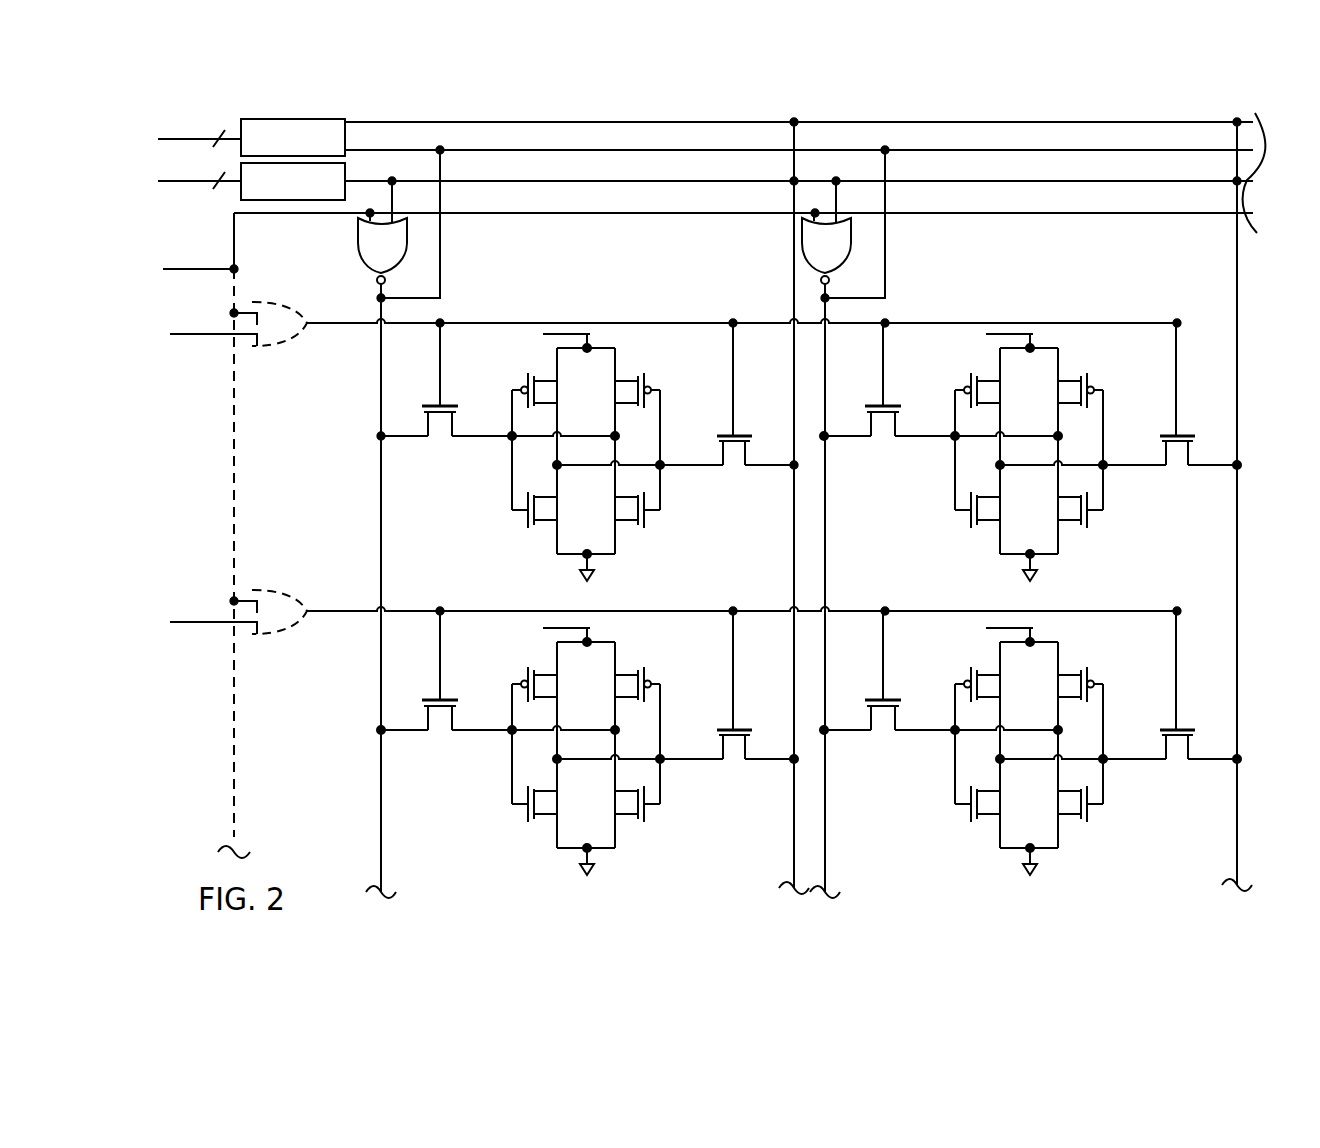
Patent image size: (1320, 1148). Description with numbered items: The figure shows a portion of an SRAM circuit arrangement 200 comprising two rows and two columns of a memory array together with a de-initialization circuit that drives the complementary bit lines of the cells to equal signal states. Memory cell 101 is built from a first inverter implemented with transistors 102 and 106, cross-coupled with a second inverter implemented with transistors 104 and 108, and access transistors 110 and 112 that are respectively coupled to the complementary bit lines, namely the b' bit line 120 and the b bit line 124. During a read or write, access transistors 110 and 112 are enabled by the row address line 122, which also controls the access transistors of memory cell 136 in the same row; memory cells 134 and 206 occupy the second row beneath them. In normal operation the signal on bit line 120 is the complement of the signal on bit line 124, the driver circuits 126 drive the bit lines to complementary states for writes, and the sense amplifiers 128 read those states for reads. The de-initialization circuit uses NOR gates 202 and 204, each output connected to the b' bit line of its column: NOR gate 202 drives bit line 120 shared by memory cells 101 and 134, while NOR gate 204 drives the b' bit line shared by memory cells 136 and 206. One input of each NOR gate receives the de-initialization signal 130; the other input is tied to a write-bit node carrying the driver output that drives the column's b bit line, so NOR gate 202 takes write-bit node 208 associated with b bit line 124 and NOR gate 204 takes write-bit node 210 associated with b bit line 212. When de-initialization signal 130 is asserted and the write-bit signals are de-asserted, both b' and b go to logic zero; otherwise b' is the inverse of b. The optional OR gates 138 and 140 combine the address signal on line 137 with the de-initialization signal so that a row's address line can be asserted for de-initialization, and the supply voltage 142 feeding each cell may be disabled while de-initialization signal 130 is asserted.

The SRAM circuit arrangement 200 is at (1034, 103).
The sense amplifiers 128 is at (346, 134).
The driver circuits 126 is at (330, 190).
The de-initialization signal 130 is at (320, 217).
The NOR gate 202 is at (393, 250).
The NOR gate 204 is at (837, 250).
The write-bit node 208 is at (392, 181).
The write-bit node 210 is at (840, 181).
The b' bit line 120 is at (383, 498).
The b bit line 124 is at (784, 524).
The b bit line 212 is at (1233, 497).
The row address line 122 is at (513, 323).
The address signal line 137 is at (220, 337).
The OR gate 138 is at (292, 333).
The OR gate 140 is at (292, 621).
The memory cell 101 is at (564, 457).
The transistor 102 is at (525, 378).
The transistor 104 is at (649, 377).
The transistor 106 is at (520, 521).
The transistor 108 is at (650, 525).
The access transistor 110 is at (436, 435).
The access transistor 112 is at (734, 465).
The memory cell 134 is at (493, 860).
The memory cell 136 is at (947, 543).
The memory cell 206 is at (945, 845).
The supply voltage 142 is at (590, 333).